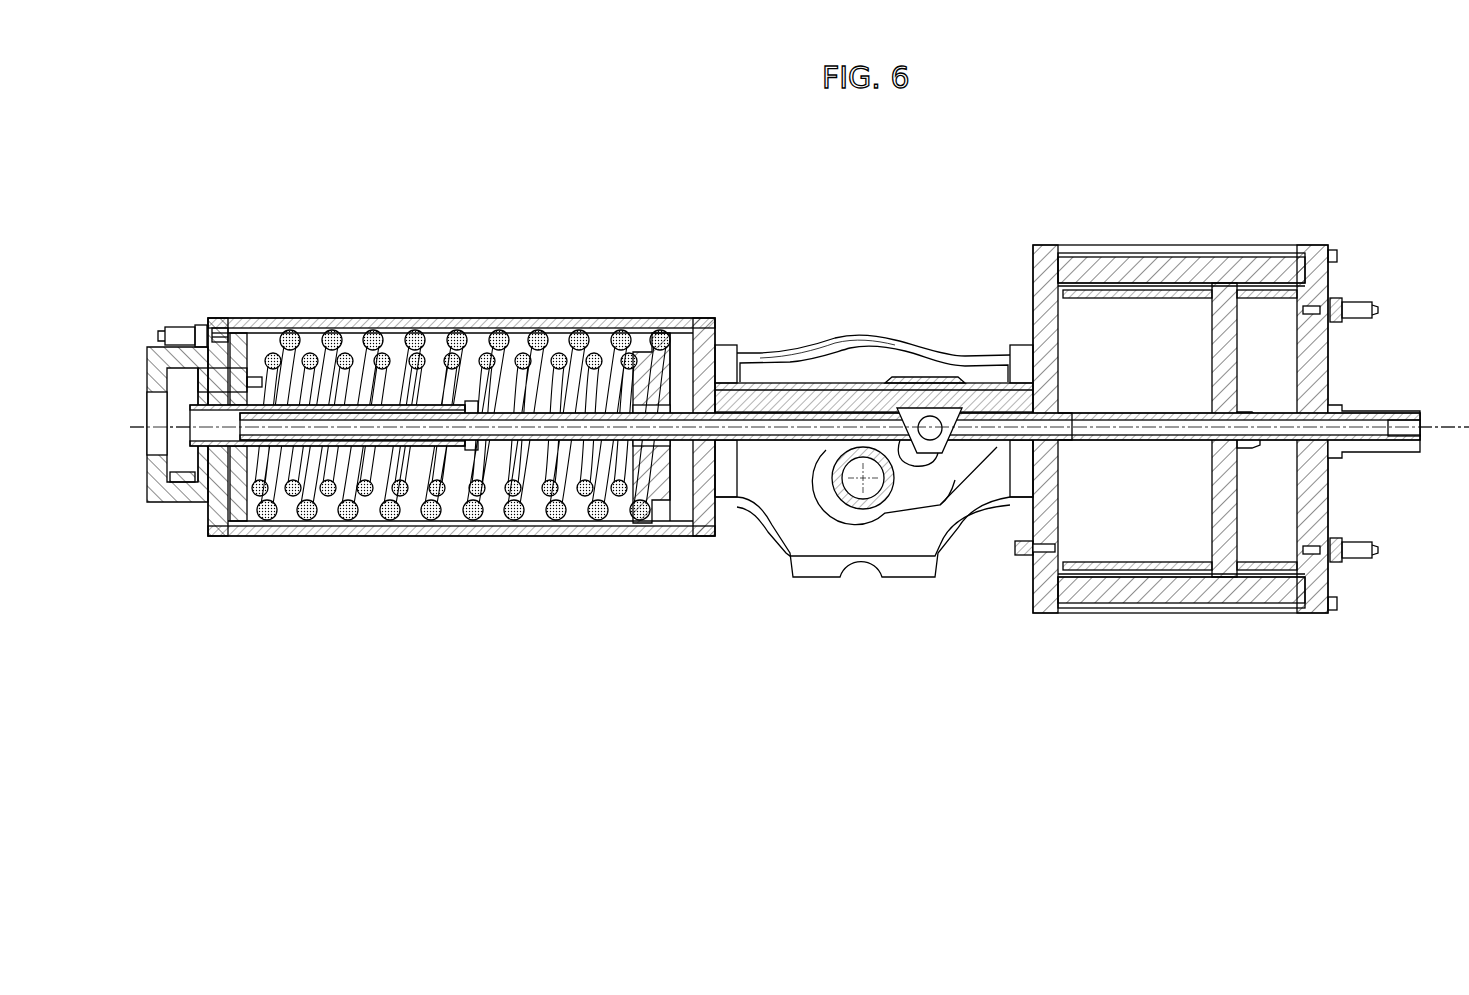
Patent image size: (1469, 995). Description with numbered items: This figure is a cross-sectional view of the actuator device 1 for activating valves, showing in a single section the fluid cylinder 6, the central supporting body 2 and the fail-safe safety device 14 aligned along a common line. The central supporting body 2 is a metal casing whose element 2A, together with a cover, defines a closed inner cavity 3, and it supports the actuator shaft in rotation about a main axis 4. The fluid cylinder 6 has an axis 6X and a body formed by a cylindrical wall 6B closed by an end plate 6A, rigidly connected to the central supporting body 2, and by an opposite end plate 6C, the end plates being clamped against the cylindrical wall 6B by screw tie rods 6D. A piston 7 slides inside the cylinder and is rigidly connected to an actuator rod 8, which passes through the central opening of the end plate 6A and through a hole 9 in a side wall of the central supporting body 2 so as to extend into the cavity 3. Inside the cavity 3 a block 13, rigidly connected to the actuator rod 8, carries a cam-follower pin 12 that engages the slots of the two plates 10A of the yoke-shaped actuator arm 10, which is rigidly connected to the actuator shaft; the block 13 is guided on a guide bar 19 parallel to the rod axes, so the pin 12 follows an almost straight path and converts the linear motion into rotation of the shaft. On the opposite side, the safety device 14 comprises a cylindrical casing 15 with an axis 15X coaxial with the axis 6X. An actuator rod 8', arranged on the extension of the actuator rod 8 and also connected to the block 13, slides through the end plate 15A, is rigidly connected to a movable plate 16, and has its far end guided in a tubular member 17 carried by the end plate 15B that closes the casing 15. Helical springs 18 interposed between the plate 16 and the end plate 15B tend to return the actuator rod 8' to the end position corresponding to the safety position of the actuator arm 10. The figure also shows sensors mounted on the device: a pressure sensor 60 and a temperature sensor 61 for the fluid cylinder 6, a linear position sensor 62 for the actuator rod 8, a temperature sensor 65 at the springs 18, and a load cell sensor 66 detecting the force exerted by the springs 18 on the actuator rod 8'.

The actuator device 1 is at (629, 196).
The central supporting body 2 is at (940, 346).
The element 2A is at (800, 346).
The inner cavity 3 is at (775, 545).
The main axis 4 is at (852, 482).
The fluid cylinder 6 is at (1314, 243).
The end plate 6A is at (1040, 300).
The cylindrical wall 6B is at (1252, 255).
The end plate 6C is at (1322, 362).
The screw tie rods 6D is at (1192, 253).
The axis 6X is at (1428, 445).
The piston 7 is at (1210, 518).
The actuator rod 8 is at (830, 403).
The actuator rod 8' is at (364, 506).
The hole 9 is at (1070, 413).
The actuator arm 10 is at (927, 518).
The plates 10A is at (955, 482).
The cam-follower pin 12 is at (932, 453).
The block 13 is at (915, 377).
The fail-safe safety device 14 is at (545, 318).
The cylindrical casing 15 is at (603, 537).
The end plate 15A is at (705, 333).
The end plate 15B is at (214, 320).
The axis 15X is at (195, 503).
The plate 16 is at (668, 350).
The tubular member 17 is at (348, 537).
The helical springs 18 is at (402, 340).
The guide bar 19 is at (845, 383).
The pressure sensor 60 is at (1356, 560).
The temperature sensor 61 is at (1356, 303).
The linear position sensor 62 is at (1022, 557).
The temperature sensor 65 is at (180, 325).
The load cell sensor 66 is at (170, 414).